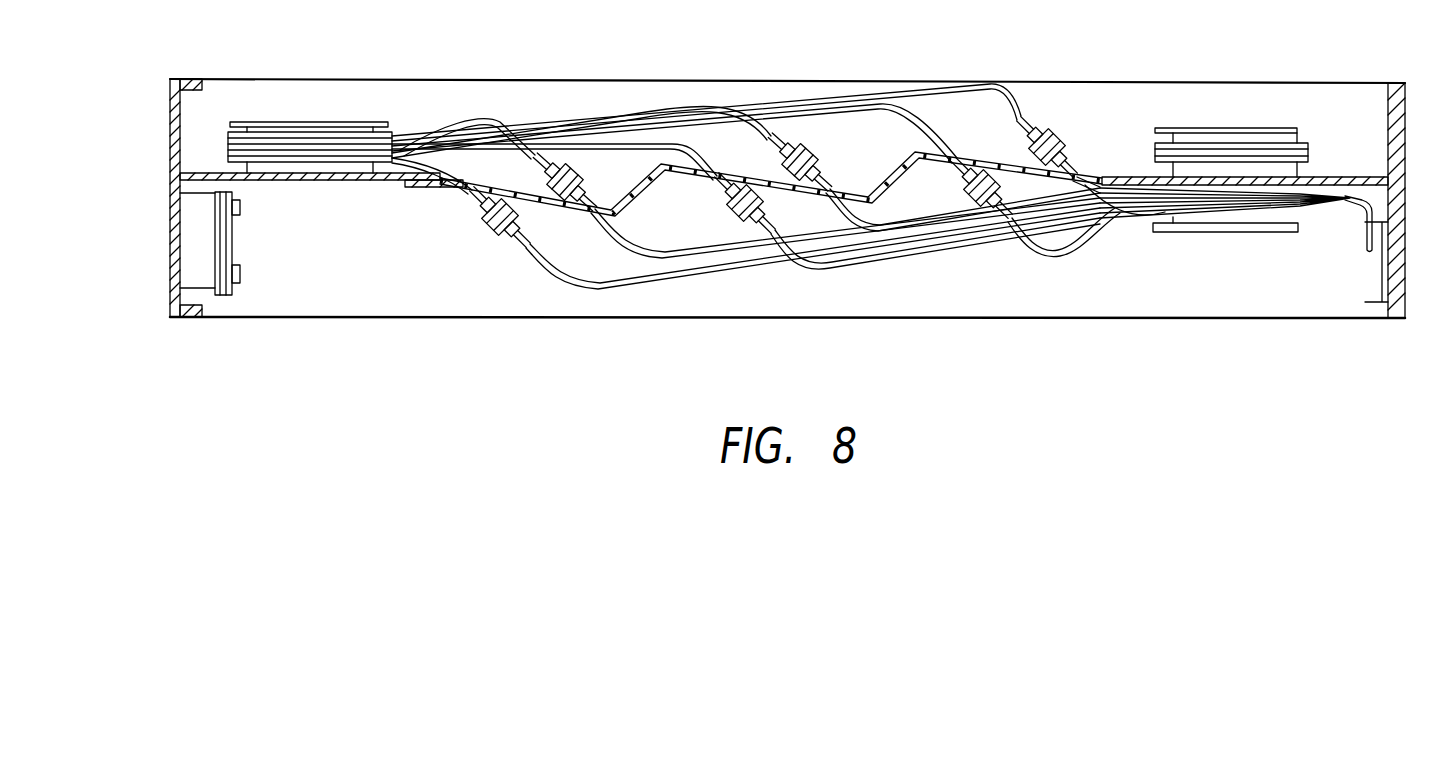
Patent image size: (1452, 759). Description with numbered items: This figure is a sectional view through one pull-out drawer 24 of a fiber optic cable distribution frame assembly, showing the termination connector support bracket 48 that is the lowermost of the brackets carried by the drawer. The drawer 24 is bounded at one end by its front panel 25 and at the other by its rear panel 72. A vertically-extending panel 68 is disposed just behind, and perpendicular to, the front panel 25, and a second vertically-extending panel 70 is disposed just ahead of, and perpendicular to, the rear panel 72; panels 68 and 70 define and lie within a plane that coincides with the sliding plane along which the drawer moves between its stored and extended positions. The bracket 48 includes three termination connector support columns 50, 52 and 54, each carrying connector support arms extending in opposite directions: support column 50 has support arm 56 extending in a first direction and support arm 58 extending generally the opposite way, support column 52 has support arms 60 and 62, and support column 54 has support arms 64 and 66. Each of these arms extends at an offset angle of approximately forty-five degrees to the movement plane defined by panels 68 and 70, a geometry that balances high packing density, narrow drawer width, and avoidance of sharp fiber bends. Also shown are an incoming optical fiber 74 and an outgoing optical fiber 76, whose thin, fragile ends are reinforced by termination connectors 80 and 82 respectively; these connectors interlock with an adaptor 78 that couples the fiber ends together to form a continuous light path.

The pull-out drawer 24 is at (248, 79).
The front panel 25 is at (168, 280).
The termination connector support bracket 48 is at (883, 150).
The support column 50 is at (566, 212).
The support column 52 is at (816, 215).
The support column 54 is at (1061, 240).
The support arm 56 is at (500, 226).
The support arm 58 is at (592, 152).
The support arm 60 is at (748, 218).
The support arm 62 is at (822, 152).
The support arm 64 is at (962, 222).
The support arm 66 is at (1050, 135).
The vertically-extending panel 68 is at (326, 180).
The vertically-extending panel 70 is at (1335, 177).
The rear panel 72 is at (1396, 113).
The incoming optical fiber 74 is at (865, 268).
The outgoing optical fiber 76 is at (647, 147).
The adaptor 78 is at (753, 222).
The termination connector 80 is at (766, 230).
The termination connector 82 is at (718, 207).